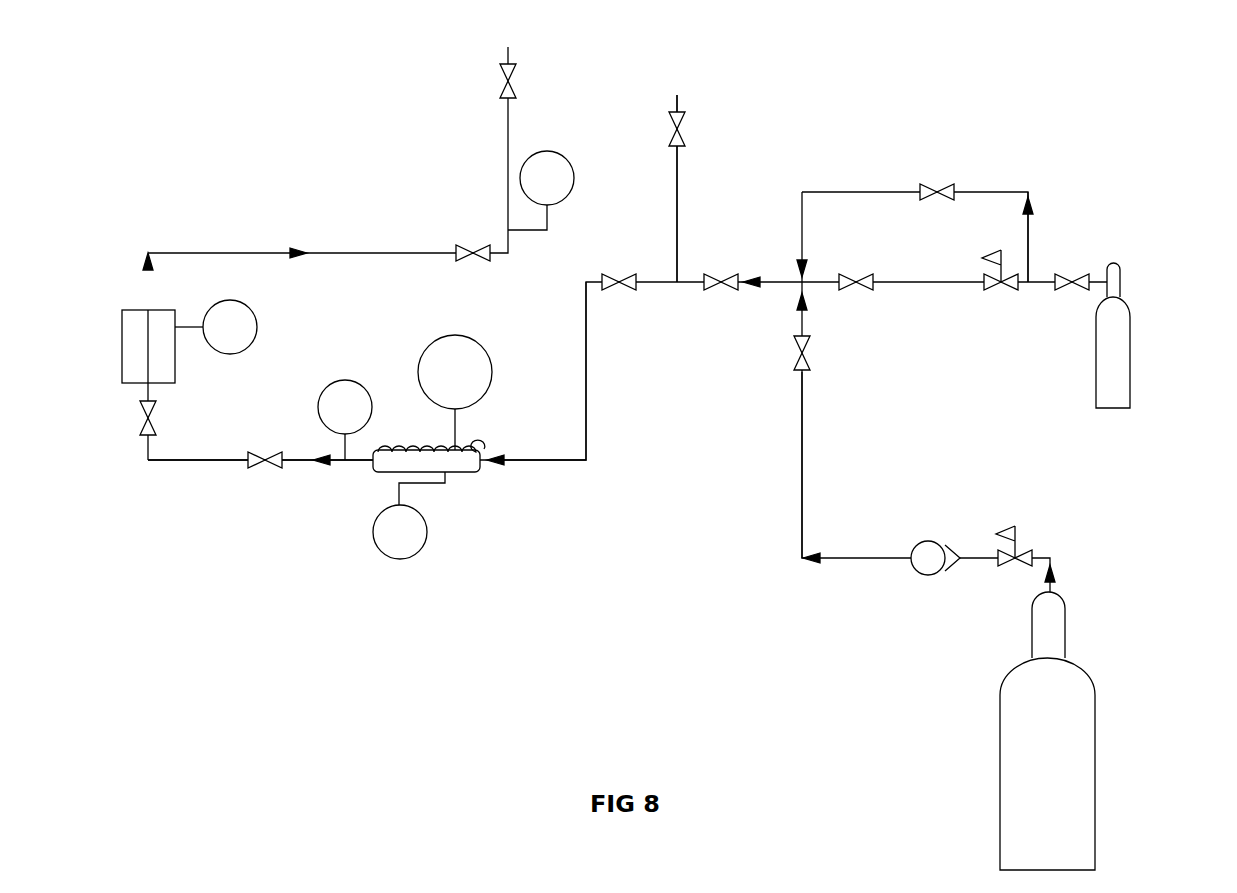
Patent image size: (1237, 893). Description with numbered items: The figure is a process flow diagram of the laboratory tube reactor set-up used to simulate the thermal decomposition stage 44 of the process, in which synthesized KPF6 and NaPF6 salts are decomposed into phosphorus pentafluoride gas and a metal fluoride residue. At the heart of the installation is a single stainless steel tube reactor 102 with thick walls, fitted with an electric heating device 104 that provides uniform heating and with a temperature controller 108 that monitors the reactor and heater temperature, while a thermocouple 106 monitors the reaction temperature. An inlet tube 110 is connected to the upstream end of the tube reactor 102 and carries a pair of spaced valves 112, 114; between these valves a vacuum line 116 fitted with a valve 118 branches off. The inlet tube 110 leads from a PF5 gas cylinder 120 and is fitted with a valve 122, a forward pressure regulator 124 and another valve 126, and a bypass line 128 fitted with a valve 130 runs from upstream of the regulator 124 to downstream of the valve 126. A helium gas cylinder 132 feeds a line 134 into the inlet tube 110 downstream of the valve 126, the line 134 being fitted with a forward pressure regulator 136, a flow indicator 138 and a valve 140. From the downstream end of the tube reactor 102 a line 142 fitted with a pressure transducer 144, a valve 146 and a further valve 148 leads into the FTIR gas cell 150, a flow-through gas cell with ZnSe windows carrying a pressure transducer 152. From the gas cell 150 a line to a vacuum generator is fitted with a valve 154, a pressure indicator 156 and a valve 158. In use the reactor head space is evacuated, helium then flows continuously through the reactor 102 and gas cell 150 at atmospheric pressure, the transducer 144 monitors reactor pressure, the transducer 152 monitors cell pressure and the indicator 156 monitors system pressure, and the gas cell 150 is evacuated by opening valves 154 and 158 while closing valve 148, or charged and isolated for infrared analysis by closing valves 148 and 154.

The stage 44 is at (1023, 117).
The tube reactor 102 is at (460, 466).
The electric heating device 104 is at (478, 448).
The thermocouple 106 is at (403, 543).
The temperature controller 108 is at (480, 380).
The inlet tube 110 is at (587, 383).
The valve 112 is at (631, 277).
The valve 114 is at (709, 287).
The vacuum line 116 is at (678, 217).
The valve 118 is at (679, 120).
The PF5 gas cylinder 120 is at (1115, 363).
The valve 122 is at (1079, 278).
The forward pressure regulator 124 is at (985, 288).
The valve 126 is at (863, 287).
The bypass line 128 is at (1030, 235).
The valve 130 is at (945, 188).
The helium gas cylinder 132 is at (1068, 790).
The line 134 is at (802, 498).
The forward pressure regulator 136 is at (1028, 540).
The flow indicator 138 is at (930, 547).
The valve 140 is at (800, 361).
The line 142 is at (183, 463).
The pressure transducer 144 is at (340, 394).
The valve 146 is at (273, 464).
The valve 148 is at (143, 404).
The FTIR gas cell 150 is at (128, 323).
The pressure transducer 152 is at (235, 323).
The valve 154 is at (465, 246).
The pressure indicator 156 is at (548, 163).
The valve 158 is at (512, 74).